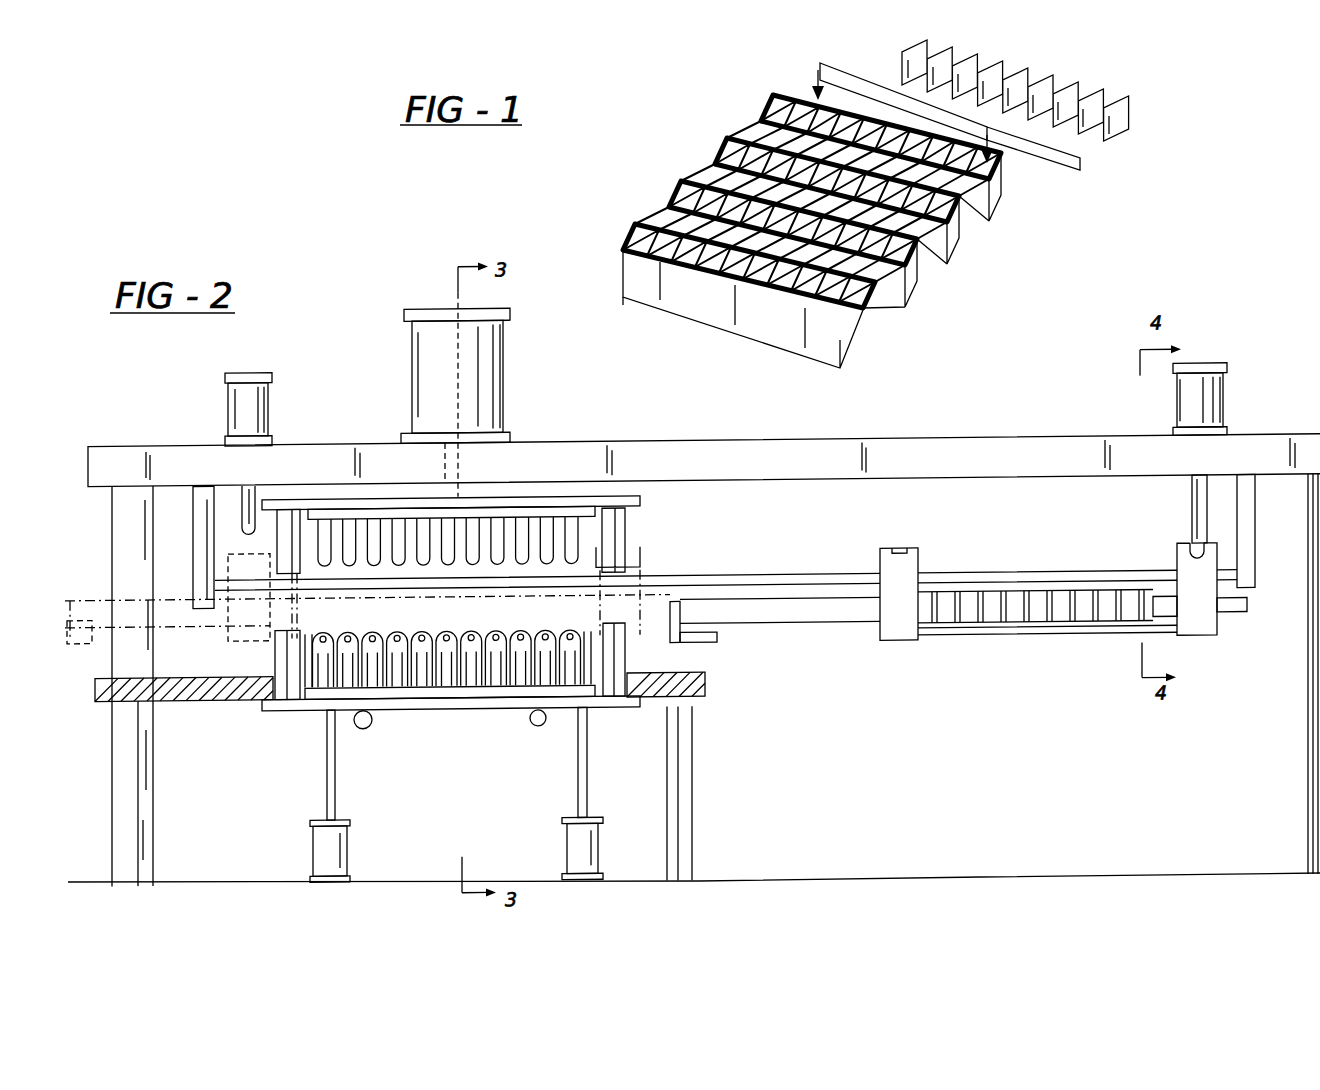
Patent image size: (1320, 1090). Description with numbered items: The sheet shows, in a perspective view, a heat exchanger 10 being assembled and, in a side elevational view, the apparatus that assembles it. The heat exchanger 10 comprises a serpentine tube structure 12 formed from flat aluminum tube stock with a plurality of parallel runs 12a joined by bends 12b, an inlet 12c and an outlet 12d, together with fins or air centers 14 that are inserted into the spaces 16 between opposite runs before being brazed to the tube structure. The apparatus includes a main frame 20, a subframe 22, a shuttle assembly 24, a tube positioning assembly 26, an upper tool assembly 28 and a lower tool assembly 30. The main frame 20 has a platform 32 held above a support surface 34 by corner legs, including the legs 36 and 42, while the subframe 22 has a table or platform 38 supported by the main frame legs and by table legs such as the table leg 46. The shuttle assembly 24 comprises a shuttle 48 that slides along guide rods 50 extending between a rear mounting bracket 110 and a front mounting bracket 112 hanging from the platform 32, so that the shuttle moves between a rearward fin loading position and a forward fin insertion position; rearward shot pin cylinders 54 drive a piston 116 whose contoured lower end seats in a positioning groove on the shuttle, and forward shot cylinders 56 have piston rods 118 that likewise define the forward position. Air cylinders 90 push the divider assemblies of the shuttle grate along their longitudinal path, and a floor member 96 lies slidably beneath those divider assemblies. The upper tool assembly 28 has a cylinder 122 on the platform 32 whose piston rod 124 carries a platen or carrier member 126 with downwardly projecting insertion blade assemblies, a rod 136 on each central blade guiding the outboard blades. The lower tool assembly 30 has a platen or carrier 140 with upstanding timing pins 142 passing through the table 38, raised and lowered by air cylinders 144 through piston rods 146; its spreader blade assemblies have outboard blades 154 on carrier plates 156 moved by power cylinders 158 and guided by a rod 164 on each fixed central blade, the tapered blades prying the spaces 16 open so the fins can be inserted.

In FIG. 1, the heat exchanger 10 is at (630, 168).
In FIG. 1, the serpentine tube structure 12 is at (616, 247).
In FIG. 1, the parallel runs 12a is at (898, 245).
In FIG. 2, the parallel runs 12a is at (480, 634).
In FIG. 1, the bends 12b is at (716, 153).
In FIG. 1, the inlet 12c is at (776, 88).
In FIG. 1, the outlet 12d is at (855, 362).
In FIG. 1, the fins or air centers 14 is at (1140, 134).
In FIG. 1, the spaces 16 is at (787, 307).
In FIG. 2, the main frame 20 is at (943, 432).
In FIG. 2, the subframe 22 is at (725, 690).
In FIG. 2, the shuttle assembly 24 is at (1053, 550).
In FIG. 2, the tube positioning assembly 26 is at (258, 660).
In FIG. 2, the upper tool assembly 28 is at (650, 533).
In FIG. 2, the lower tool assembly 30 is at (441, 795).
In FIG. 2, the platform 32 is at (575, 446).
In FIG. 2, the support surface 34 is at (998, 877).
In FIG. 2, the corner leg 36 is at (125, 645).
In FIG. 2, the table or platform 38 is at (120, 578).
In FIG. 2, the corner leg 42 is at (1308, 792).
In FIG. 2, the table leg 46 is at (690, 855).
In FIG. 2, the shuttle 48 is at (875, 642).
In FIG. 2, the guide rods 50 is at (773, 581).
In FIG. 2, the shot pin cylinders 54 is at (1185, 418).
In FIG. 2, the shot cylinders 56 is at (270, 420).
In FIG. 2, the air cylinders 90 is at (1250, 623).
In FIG. 2, the floor member 96 is at (1073, 645).
In FIG. 2, the rear mounting bracket 110 is at (1245, 552).
In FIG. 2, the front mounting bracket 112 is at (203, 560).
In FIG. 2, the piston 116 is at (1195, 505).
In FIG. 2, the piston rods 118 is at (246, 520).
In FIG. 2, the cylinder 122 is at (413, 373).
In FIG. 2, the piston rod 124 is at (462, 501).
In FIG. 2, the platen or carrier member 126 is at (625, 501).
In FIG. 2, the rod 136 is at (350, 568).
In FIG. 2, the platen or carrier 140 is at (462, 705).
In FIG. 2, the timing pins 142 is at (615, 655).
In FIG. 2, the air cylinders 144 is at (312, 855).
In FIG. 2, the piston rods 146 is at (588, 774).
In FIG. 2, the outboard blades 154 is at (547, 635).
In FIG. 2, the carrier plates 156 is at (512, 712).
In FIG. 2, the power cylinders 158 is at (363, 732).
In FIG. 2, the rod 164 is at (350, 635).